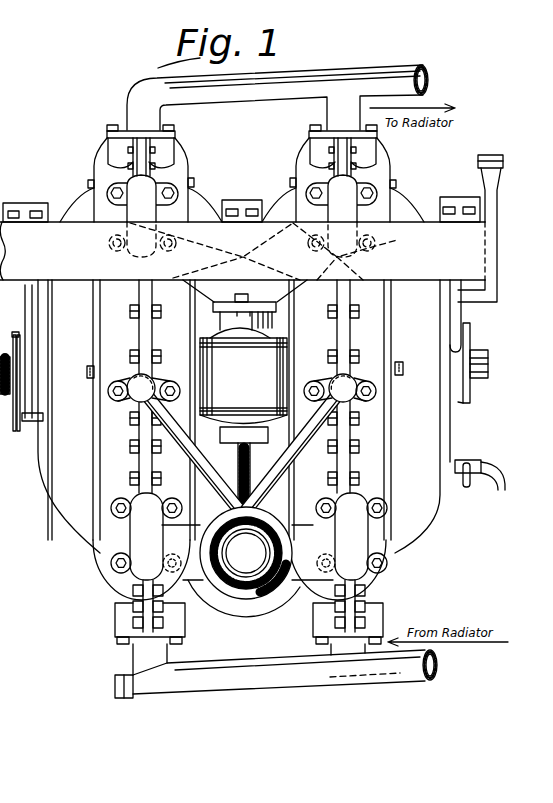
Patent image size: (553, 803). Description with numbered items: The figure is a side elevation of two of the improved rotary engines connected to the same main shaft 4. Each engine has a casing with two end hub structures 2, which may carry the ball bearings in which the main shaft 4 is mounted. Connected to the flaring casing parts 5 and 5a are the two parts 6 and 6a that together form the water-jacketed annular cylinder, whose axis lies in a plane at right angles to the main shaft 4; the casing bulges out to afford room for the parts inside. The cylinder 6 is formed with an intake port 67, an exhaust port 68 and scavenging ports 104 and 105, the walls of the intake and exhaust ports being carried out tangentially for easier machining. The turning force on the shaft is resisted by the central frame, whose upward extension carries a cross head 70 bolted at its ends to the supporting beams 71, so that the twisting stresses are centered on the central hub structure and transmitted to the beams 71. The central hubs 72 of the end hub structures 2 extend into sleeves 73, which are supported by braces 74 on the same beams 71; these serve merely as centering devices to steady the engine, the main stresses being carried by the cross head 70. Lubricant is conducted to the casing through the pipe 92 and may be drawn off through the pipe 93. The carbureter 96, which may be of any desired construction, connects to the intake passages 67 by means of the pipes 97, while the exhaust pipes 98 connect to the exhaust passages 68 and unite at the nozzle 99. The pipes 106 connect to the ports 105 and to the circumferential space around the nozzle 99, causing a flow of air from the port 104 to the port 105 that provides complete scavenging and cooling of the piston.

The end hub structure 2 is at (43, 458).
The main shaft 4 is at (491, 360).
The casing part 5 is at (200, 210).
The casing part 5a is at (282, 207).
The cylinder part 6 is at (180, 158).
The cylinder part 6a is at (100, 157).
The intake port 67 is at (111, 238).
The exhaust port 68 is at (110, 556).
The cross head 70 is at (244, 200).
The supporting beam 71 is at (242, 251).
The central hub 72 is at (20, 413).
The sleeve 73 is at (30, 422).
The brace 74 is at (31, 203).
The lubricant pipe 92 is at (498, 204).
The drain pipe 93 is at (474, 461).
The carbureter 96 is at (243, 385).
The intake pipe 97 is at (207, 288).
The exhaust pipe 98 is at (213, 611).
The nozzle 99 is at (222, 548).
The scavenging port 104 is at (88, 380).
The scavenging port 105 is at (157, 380).
The pipe 106 is at (232, 473).